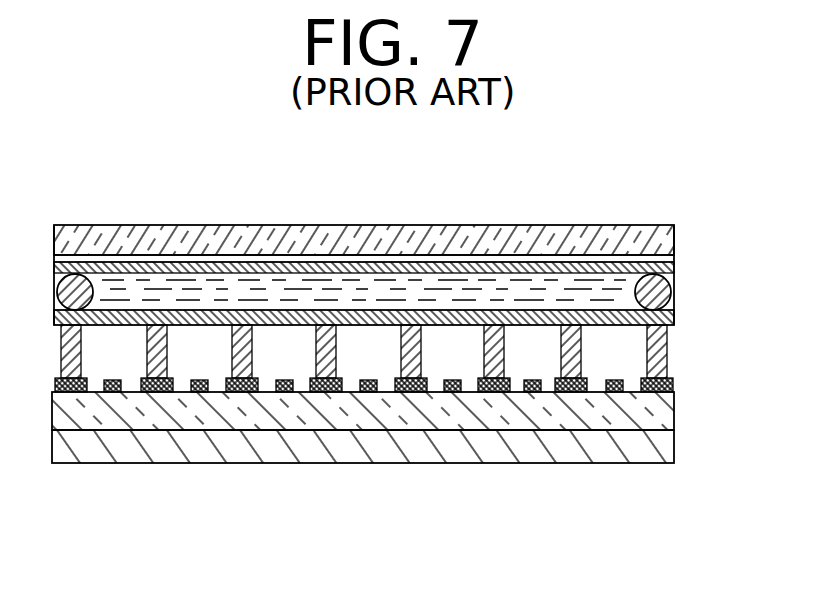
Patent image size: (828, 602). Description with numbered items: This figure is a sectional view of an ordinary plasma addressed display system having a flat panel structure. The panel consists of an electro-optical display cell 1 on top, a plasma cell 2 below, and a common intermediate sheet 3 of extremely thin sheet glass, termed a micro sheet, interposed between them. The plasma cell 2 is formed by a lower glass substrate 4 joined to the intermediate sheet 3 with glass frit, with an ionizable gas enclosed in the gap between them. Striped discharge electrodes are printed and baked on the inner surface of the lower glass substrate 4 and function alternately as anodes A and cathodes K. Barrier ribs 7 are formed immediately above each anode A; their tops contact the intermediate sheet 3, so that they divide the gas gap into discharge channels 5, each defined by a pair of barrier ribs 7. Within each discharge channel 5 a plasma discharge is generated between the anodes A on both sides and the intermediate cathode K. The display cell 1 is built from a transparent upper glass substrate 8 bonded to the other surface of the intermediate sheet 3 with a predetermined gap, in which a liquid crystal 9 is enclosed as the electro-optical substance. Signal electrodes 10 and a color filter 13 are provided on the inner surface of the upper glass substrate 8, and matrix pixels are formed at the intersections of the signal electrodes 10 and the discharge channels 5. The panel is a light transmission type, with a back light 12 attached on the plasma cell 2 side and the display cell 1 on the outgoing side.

The electro-optical display cell 1 is at (404, 252).
The plasma cell 2 is at (393, 425).
The intermediate sheet 3 is at (674, 320).
The lower glass substrate 4 is at (645, 415).
The discharge channels 5 is at (602, 363).
The barrier ribs 7 is at (423, 353).
The upper glass substrate 8 is at (405, 245).
The liquid crystal 9 is at (163, 287).
The signal electrodes 10 is at (275, 265).
The back light 12 is at (363, 444).
The color filter 13 is at (595, 262).
The anode A is at (157, 393).
The cathode K is at (200, 393).